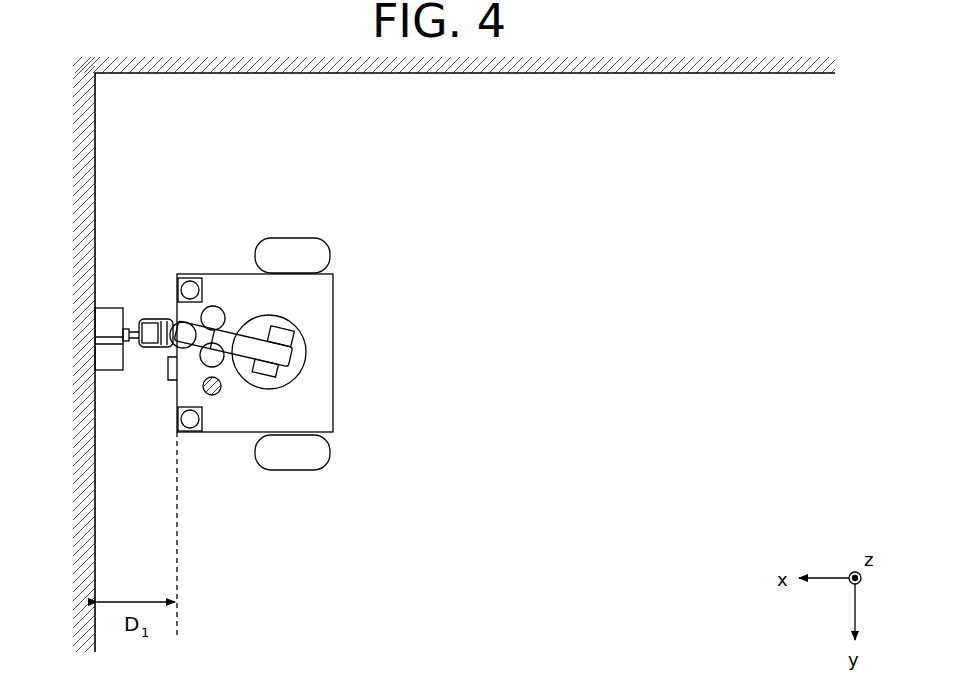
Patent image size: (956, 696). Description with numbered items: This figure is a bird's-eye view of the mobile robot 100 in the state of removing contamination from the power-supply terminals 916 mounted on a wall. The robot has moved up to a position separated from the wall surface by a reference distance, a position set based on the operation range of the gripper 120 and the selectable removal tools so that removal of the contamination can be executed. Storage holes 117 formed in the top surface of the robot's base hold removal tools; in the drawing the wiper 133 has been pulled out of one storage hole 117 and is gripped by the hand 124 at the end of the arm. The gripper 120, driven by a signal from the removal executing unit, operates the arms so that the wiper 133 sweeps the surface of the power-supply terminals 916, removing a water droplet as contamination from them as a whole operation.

The mobile robot 100 is at (345, 193).
The gripper 120 is at (238, 343).
The hand 124 is at (151, 320).
The wiper 133 is at (147, 338).
The storage hole 117 is at (216, 394).
The power-supply terminal 916 is at (109, 308).